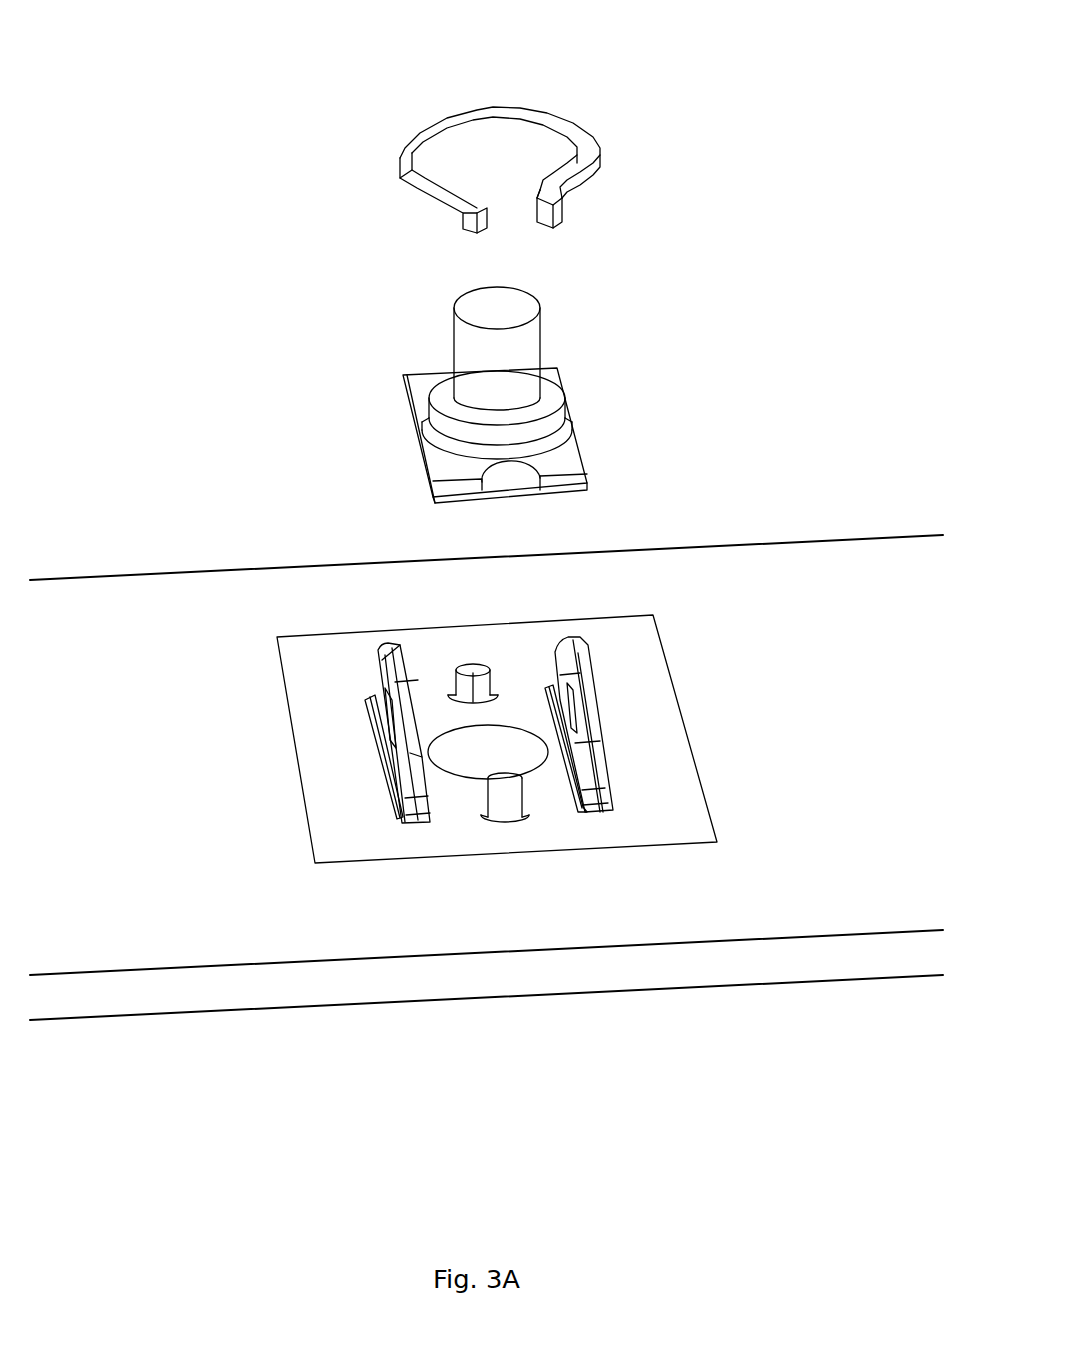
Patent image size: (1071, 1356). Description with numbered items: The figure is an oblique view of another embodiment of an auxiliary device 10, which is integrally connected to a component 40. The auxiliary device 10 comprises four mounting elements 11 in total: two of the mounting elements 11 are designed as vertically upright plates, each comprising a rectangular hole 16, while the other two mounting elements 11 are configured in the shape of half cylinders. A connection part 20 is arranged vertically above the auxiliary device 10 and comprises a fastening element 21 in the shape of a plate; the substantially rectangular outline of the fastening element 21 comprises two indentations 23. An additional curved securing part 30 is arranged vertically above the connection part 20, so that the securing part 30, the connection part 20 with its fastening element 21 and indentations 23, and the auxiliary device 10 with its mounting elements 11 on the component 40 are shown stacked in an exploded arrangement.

The auxiliary device 10 is at (508, 798).
The mounting elements 11 is at (574, 812).
The rectangular hole 16 is at (388, 750).
The connection part 20 is at (506, 395).
The fastening element 21 is at (506, 417).
The indentations 23 is at (500, 488).
The curved securing part 30 is at (600, 107).
The component 40 is at (152, 840).